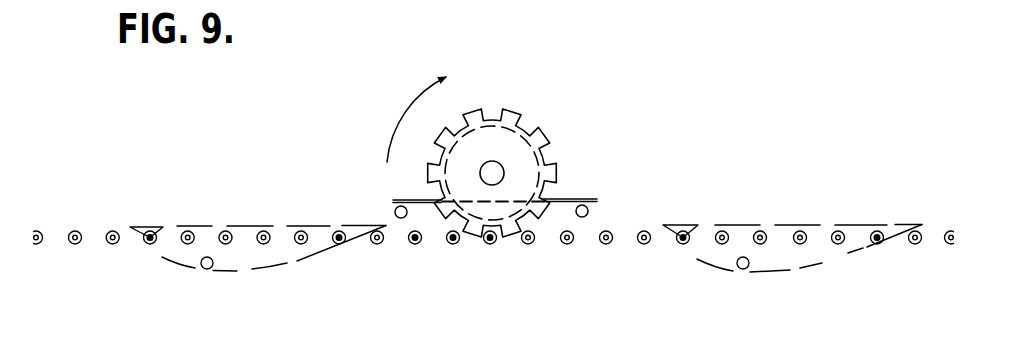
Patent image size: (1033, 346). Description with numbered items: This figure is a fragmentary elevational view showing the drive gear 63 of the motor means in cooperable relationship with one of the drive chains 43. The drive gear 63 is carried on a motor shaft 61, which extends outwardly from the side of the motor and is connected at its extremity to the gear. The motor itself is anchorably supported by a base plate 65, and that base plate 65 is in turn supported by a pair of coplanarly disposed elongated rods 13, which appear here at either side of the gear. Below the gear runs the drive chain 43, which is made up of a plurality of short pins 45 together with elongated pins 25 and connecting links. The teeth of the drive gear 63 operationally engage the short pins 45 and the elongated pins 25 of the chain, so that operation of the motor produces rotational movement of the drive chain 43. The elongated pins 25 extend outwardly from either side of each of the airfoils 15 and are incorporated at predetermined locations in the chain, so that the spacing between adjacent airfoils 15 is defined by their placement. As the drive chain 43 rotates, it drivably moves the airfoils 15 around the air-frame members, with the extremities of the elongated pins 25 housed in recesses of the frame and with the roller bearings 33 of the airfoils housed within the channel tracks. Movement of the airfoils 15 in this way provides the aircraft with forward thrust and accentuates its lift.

The elongated rods 13 is at (395, 211).
The airfoils 15 is at (264, 274).
The elongated pins 25 is at (150, 240).
The roller bearings 33 is at (209, 268).
The drive chains 43 is at (559, 259).
The short pins 45 is at (415, 244).
The motor shafts 61 is at (492, 173).
The drive gear 63 is at (543, 133).
The base plate 65 is at (566, 200).